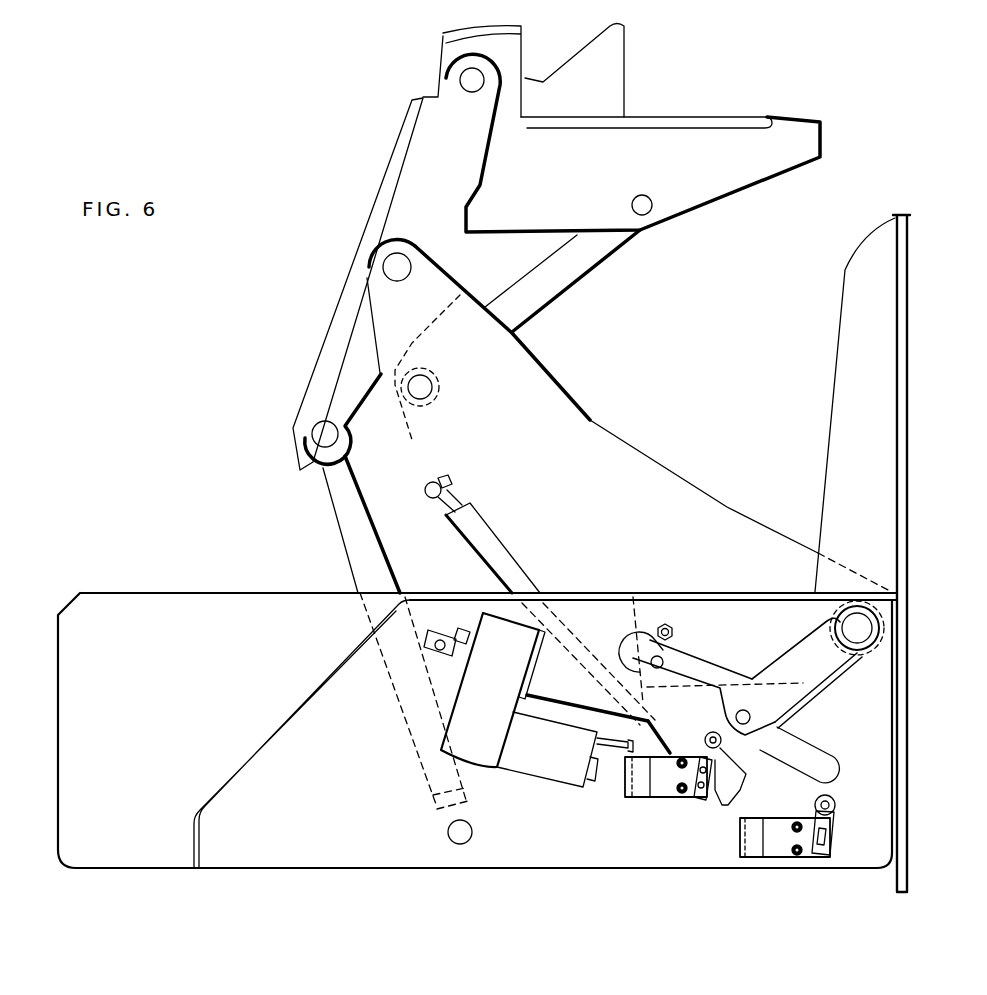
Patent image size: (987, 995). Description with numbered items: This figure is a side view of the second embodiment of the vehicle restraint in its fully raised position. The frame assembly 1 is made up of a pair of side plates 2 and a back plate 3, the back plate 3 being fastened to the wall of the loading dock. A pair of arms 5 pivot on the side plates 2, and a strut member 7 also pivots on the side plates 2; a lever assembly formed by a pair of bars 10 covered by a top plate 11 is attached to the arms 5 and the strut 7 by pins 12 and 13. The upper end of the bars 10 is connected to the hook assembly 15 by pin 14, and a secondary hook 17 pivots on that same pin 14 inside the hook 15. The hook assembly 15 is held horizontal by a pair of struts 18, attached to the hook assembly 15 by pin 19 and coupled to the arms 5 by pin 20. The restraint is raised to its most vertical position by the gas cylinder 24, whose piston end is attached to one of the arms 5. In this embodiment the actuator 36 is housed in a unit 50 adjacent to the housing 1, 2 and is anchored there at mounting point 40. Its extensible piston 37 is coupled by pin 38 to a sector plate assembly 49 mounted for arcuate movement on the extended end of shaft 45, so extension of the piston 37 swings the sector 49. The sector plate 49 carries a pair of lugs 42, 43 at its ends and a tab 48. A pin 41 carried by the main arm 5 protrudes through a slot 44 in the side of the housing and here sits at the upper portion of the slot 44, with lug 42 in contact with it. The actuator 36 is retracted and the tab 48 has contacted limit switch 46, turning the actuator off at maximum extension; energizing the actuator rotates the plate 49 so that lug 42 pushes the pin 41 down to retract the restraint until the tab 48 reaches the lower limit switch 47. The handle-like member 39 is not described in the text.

The frame assembly 1 is at (477, 714).
The side plates 2 is at (477, 714).
The back plate 3 is at (913, 322).
The arms 5 is at (624, 289).
The strut member 7 is at (348, 535).
The bars 10 is at (321, 351).
The top plate 11 is at (373, 206).
The pin 12 is at (392, 262).
The pin 13 is at (318, 438).
The pin 14 is at (462, 75).
The hook assembly 15 is at (793, 140).
The secondary hook 17 is at (593, 93).
The struts 18 is at (573, 258).
The pin 19 is at (650, 196).
The pin 20 is at (433, 388).
The gas cylinder 24 is at (480, 540).
The actuator 36 is at (499, 700).
The extensible piston 37 is at (741, 682).
The pin 38 is at (751, 718).
The handle 39 is at (830, 758).
The mounting point 40 is at (430, 655).
The pin 41 is at (645, 655).
The lug 42 is at (647, 637).
The lug 43 is at (728, 790).
The slot 44 is at (652, 732).
The shaft 45 is at (866, 630).
The limit switch 46 is at (663, 798).
The limit switch 47 is at (780, 860).
The tab 48 is at (752, 757).
The sector plate assembly 49 is at (853, 664).
The unit 50 is at (285, 722).